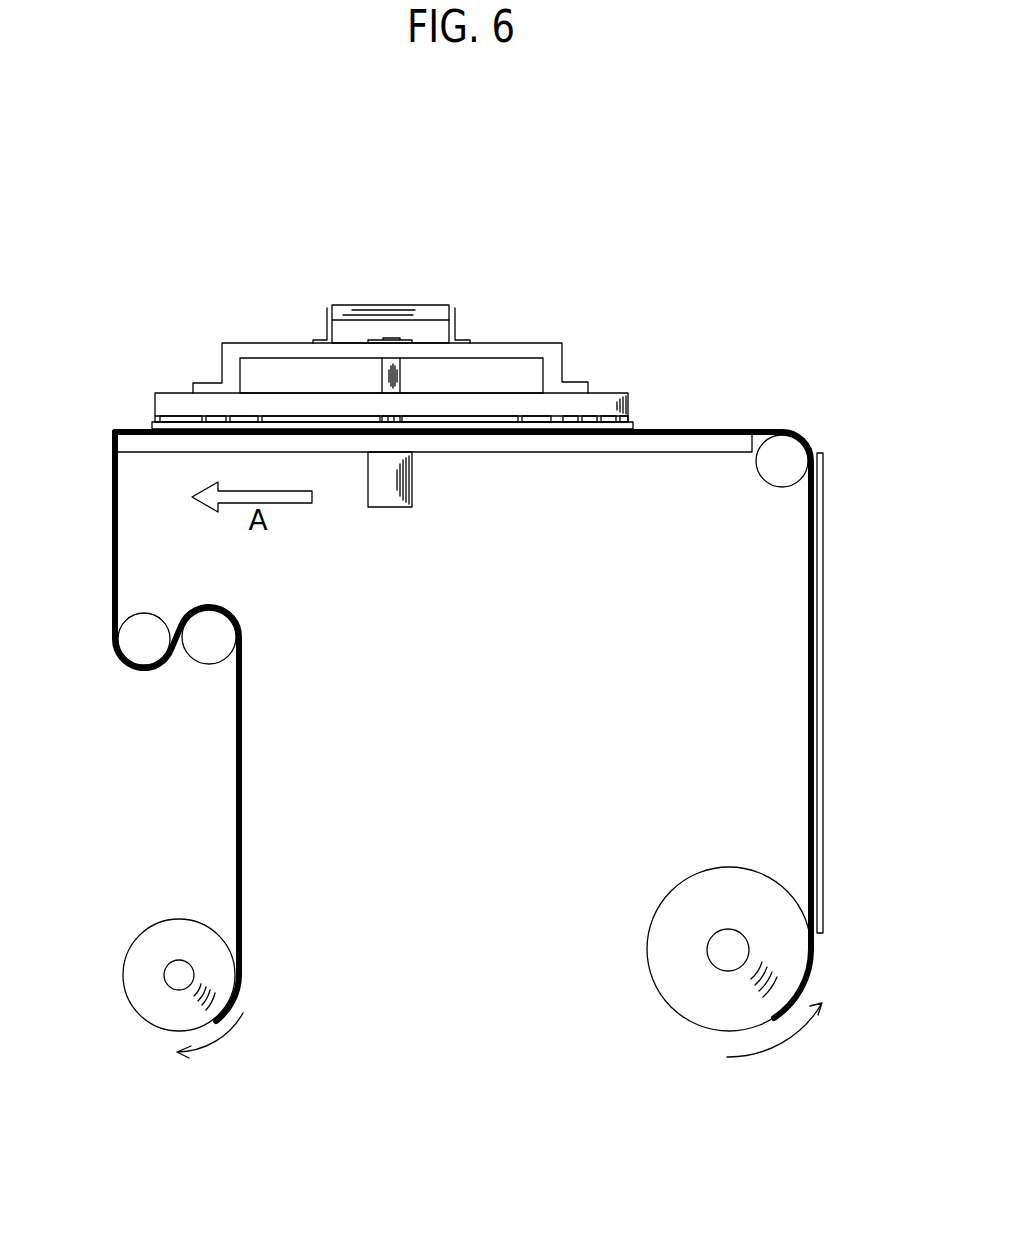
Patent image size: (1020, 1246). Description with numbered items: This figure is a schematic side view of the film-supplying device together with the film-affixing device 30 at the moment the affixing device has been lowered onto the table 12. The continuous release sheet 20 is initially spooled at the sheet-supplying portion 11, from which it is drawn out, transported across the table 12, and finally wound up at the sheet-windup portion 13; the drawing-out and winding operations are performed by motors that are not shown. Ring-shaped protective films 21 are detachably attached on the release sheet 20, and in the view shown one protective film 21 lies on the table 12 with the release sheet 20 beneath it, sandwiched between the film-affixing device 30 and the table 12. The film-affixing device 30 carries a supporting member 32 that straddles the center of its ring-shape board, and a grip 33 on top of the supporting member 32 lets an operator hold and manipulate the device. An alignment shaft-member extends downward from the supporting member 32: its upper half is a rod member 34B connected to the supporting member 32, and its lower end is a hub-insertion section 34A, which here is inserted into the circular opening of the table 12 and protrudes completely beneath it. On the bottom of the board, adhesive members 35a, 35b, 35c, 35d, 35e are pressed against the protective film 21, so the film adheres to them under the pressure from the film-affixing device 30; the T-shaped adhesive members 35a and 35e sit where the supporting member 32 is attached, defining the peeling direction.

The sheet-supplying portion 11 is at (648, 947).
The table 12 is at (632, 443).
The sheet-windup portion 13 is at (123, 968).
The release sheet 20 is at (808, 750).
The protective film 21 is at (633, 427).
The film-affixing device 30 is at (366, 335).
The supporting member 32 is at (228, 362).
The grip 33 is at (392, 312).
The hub-insertion section 34A is at (390, 492).
The rod member 34B is at (383, 375).
The adhesive member 35a is at (183, 418).
The adhesive member 35b is at (240, 417).
The adhesive member 35c is at (390, 416).
The adhesive member 35d is at (537, 417).
The adhesive member 35e is at (600, 410).